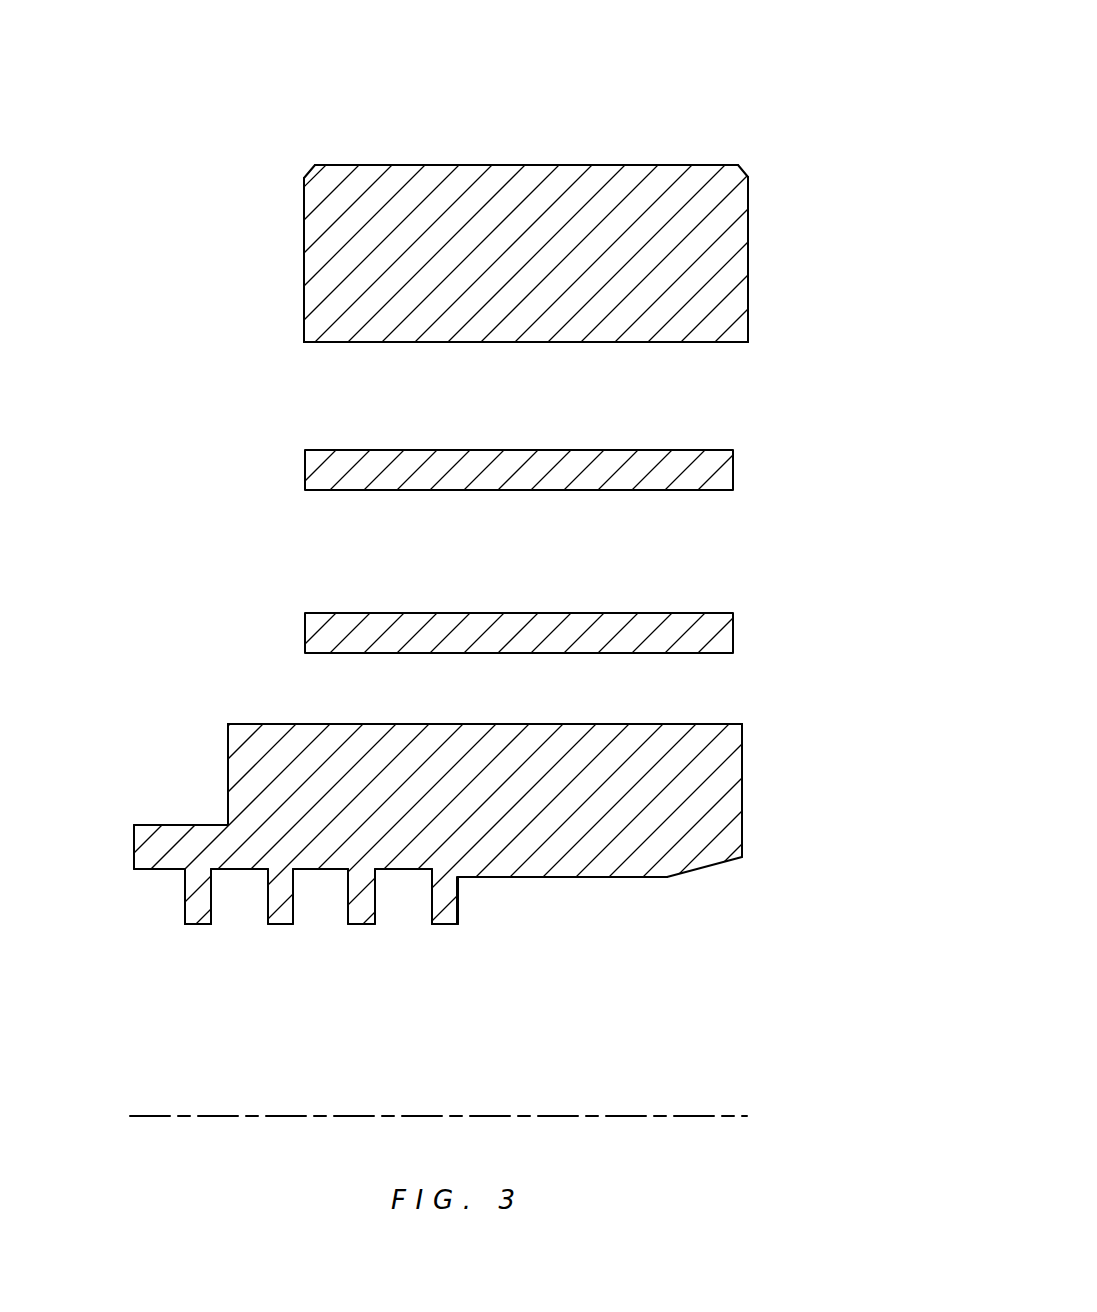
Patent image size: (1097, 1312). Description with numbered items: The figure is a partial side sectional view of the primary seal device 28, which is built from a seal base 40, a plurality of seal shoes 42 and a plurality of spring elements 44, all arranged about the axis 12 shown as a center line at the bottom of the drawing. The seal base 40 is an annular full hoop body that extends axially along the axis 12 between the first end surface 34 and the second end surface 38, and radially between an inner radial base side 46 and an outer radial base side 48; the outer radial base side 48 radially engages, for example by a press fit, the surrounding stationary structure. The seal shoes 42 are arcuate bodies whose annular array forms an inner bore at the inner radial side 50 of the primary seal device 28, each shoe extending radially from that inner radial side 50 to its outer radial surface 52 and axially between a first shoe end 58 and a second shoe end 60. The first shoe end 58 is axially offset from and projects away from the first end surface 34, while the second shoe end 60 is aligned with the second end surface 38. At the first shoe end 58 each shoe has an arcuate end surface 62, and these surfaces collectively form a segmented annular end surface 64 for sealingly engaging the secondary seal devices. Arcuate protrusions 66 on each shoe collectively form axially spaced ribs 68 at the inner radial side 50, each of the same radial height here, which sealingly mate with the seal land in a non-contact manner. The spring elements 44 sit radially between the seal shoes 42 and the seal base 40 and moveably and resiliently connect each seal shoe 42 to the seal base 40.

The primary seal device 28 is at (676, 78).
The seal base 40 is at (760, 247).
The first end surface 34 is at (304, 222).
The outer radial base side 48 is at (710, 165).
The second end surface 38 is at (748, 207).
The inner radial base side 46 is at (725, 342).
The spring elements 44 is at (752, 443).
The seal shoes 42 is at (752, 796).
The outer radial surface 52 is at (268, 724).
The second shoe end 60 is at (742, 823).
The end surface 64 is at (166, 774).
The arcuate end surface 62 is at (228, 773).
The first shoe end 58 is at (134, 840).
The arcuate protrusions 66 is at (300, 931).
The ribs 68 is at (198, 925).
The inner radial side 50 is at (494, 930).
The axis 12 is at (727, 1116).